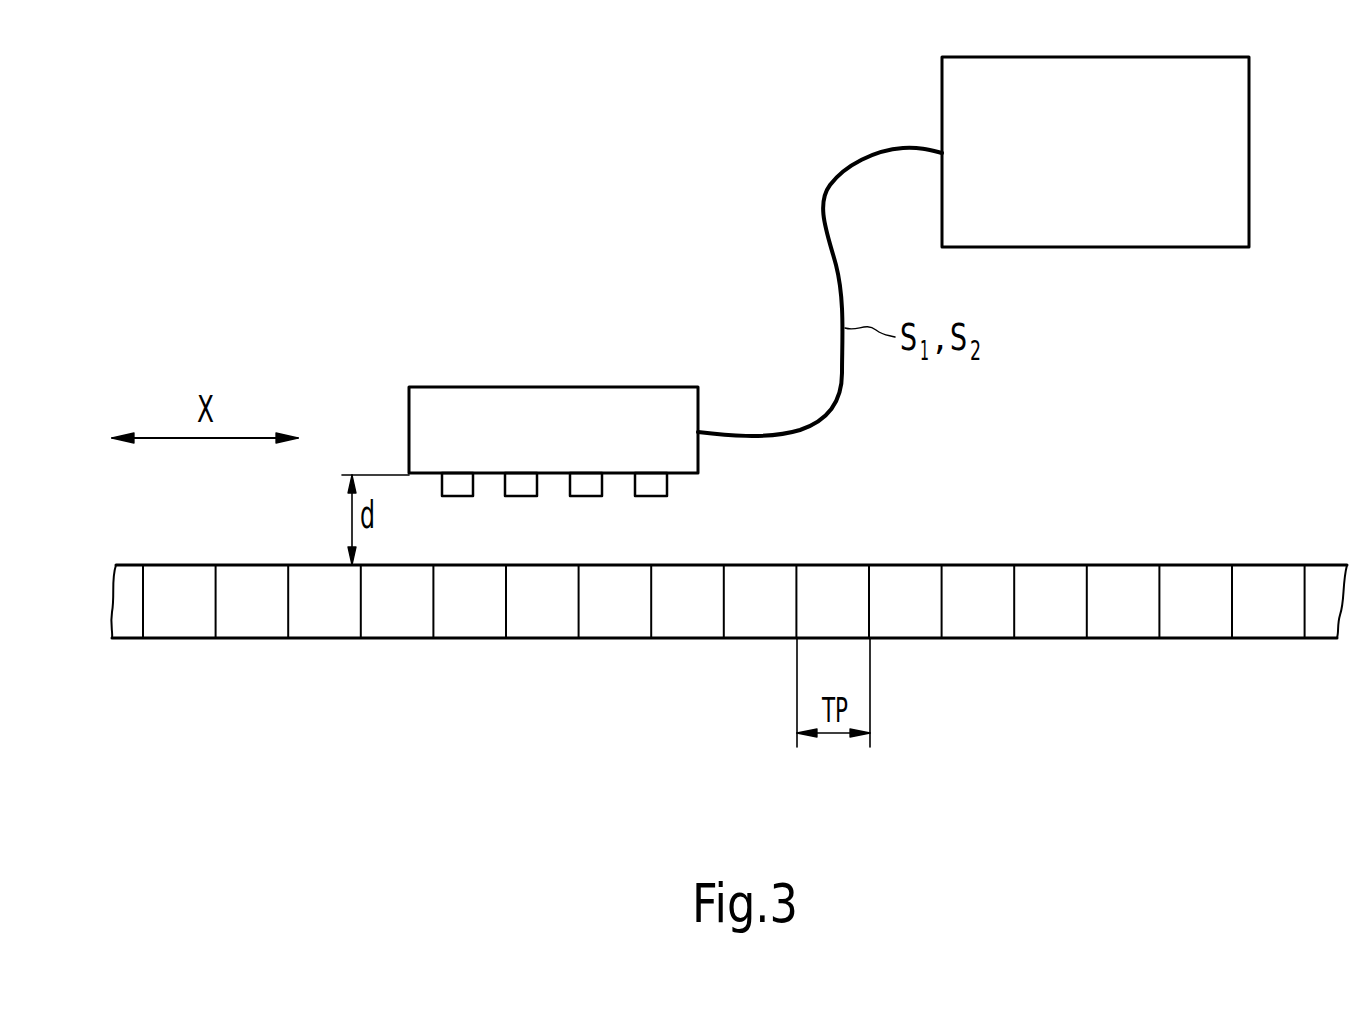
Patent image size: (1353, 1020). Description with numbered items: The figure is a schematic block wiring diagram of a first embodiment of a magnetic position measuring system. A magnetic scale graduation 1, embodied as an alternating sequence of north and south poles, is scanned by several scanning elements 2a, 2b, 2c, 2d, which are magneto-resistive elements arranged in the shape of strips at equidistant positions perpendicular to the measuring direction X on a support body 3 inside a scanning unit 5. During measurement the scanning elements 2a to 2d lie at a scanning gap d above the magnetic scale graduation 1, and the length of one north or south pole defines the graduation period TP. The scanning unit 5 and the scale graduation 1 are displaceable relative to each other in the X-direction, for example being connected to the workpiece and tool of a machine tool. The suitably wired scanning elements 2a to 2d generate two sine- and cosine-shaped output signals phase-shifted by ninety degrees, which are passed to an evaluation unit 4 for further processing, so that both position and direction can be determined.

The magnetic scale graduation 1 is at (300, 674).
The scanning element 2a is at (460, 485).
The scanning element 2b is at (522, 485).
The scanning element 2c is at (585, 485).
The scanning element 2d is at (647, 485).
The support body 3 is at (552, 403).
The evaluation unit 4 is at (1237, 115).
The scanning unit 5 is at (551, 347).